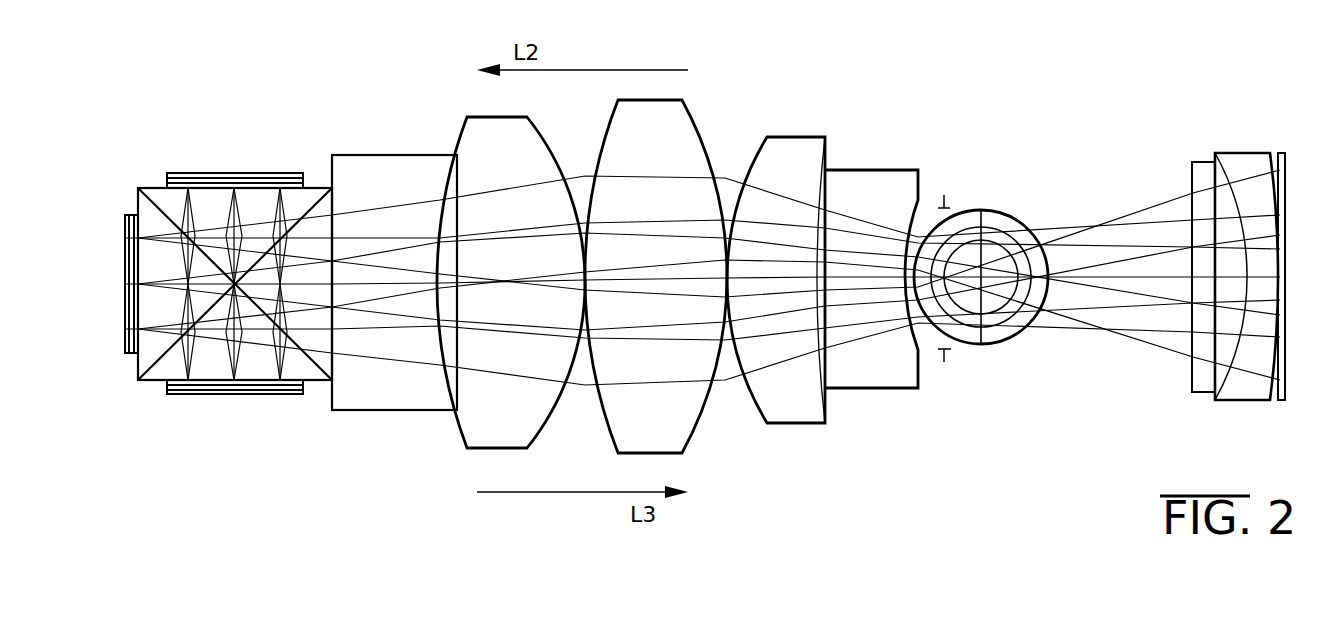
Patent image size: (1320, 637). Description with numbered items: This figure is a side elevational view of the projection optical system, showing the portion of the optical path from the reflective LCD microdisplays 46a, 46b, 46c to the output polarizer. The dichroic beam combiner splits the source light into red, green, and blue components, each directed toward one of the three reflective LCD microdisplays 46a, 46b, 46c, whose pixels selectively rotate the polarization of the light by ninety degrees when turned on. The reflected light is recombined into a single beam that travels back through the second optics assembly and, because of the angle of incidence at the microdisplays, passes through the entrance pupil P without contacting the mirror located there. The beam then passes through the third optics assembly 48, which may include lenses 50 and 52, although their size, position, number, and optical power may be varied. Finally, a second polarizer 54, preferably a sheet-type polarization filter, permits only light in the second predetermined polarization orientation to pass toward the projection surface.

The reflective LCD microdisplay 46a is at (127, 348).
The reflective LCD microdisplay 46b is at (186, 396).
The reflective LCD microdisplay 46c is at (183, 173).
The third optics assembly 48 is at (1221, 265).
The lens 50 is at (1202, 380).
The lens 52 is at (1243, 390).
The second polarizer 54 is at (1287, 393).
The entrance pupil P is at (958, 360).